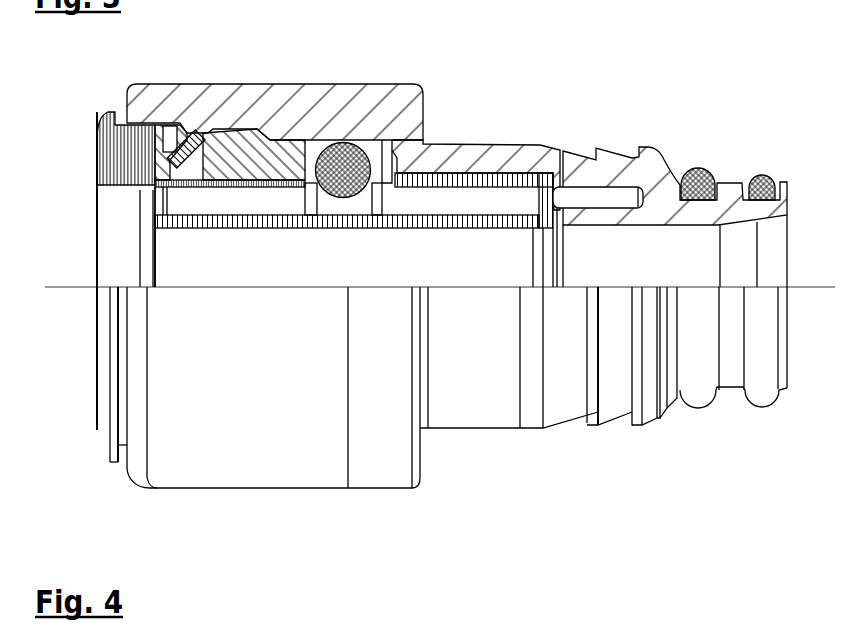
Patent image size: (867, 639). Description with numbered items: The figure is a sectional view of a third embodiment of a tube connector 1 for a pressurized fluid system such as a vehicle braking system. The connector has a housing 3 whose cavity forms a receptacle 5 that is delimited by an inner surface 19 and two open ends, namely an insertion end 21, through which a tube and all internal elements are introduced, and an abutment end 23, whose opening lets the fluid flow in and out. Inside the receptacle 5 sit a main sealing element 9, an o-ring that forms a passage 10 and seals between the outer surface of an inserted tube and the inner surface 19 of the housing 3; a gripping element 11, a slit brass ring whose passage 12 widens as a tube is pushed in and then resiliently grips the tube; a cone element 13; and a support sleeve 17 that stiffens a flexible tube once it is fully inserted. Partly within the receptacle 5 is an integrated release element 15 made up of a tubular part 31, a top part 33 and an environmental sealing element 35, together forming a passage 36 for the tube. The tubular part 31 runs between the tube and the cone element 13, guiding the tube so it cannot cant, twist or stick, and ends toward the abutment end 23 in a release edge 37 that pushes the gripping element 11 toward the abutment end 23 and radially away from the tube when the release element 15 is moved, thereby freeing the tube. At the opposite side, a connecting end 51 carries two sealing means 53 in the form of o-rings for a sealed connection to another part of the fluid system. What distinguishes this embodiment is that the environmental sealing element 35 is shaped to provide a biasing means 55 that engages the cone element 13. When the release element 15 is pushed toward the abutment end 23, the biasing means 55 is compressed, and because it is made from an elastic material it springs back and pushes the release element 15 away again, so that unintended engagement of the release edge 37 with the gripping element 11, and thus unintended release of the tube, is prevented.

The tube connector 1 is at (720, 83).
The housing 3 is at (446, 372).
The receptacle 5 is at (373, 137).
The main sealing element 9 is at (370, 147).
The passage 10 is at (352, 273).
The gripping element 11 is at (338, 157).
The passage 12 is at (284, 273).
The cone element 13 is at (247, 143).
The integrated release element 15 is at (73, 458).
The support sleeve 17 is at (520, 180).
The inner surface 19 is at (395, 147).
The insertion end 21 is at (62, 337).
The abutment end 23 is at (673, 273).
The tubular part 31 is at (168, 187).
The top part 33 is at (98, 430).
The environmental sealing element 35 is at (157, 202).
The passage 36 is at (134, 273).
The release edge 37 is at (268, 182).
The connecting end 51 is at (713, 457).
The sealing means 53 is at (699, 382).
The biasing means 55 is at (195, 148).